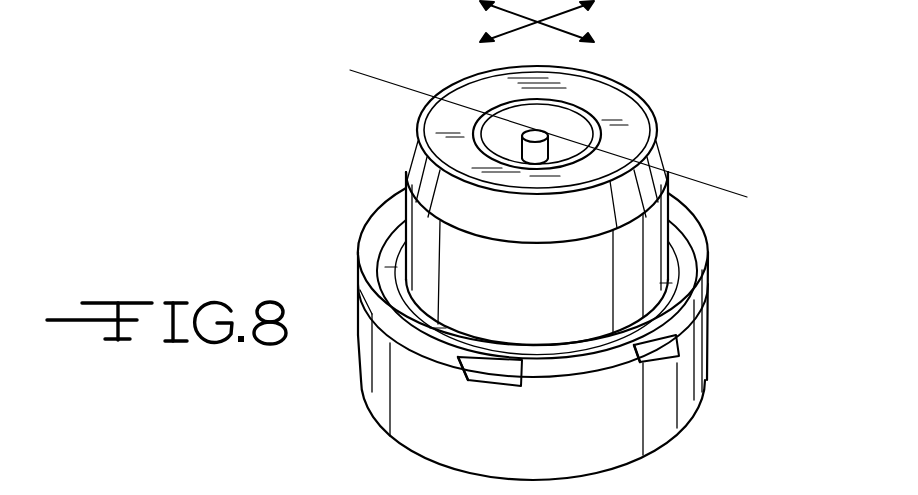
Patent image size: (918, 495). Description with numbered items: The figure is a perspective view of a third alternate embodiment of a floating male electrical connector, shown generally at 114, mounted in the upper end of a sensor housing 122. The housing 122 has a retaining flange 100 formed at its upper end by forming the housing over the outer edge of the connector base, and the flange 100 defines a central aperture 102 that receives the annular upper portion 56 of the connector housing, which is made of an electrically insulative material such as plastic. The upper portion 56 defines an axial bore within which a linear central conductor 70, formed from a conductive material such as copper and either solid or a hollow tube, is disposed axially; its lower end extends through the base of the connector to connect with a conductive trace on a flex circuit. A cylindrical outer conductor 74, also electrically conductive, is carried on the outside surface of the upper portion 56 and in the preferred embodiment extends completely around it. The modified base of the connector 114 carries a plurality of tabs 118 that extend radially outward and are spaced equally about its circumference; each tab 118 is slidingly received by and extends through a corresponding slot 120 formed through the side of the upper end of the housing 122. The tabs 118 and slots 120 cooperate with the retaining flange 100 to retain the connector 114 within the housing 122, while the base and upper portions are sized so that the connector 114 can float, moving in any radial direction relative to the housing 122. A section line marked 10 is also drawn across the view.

The section line 10 is at (408, 67).
The annular upper portion 56 is at (567, 90).
The central conductor 70 is at (537, 148).
The outer conductor 74 is at (630, 93).
The retaining flange 100 is at (387, 243).
The central aperture 102 is at (678, 254).
The male connector 114 is at (755, 108).
The tabs 118 is at (484, 377).
The slots 120 is at (463, 392).
The sensor housing 122 is at (678, 423).